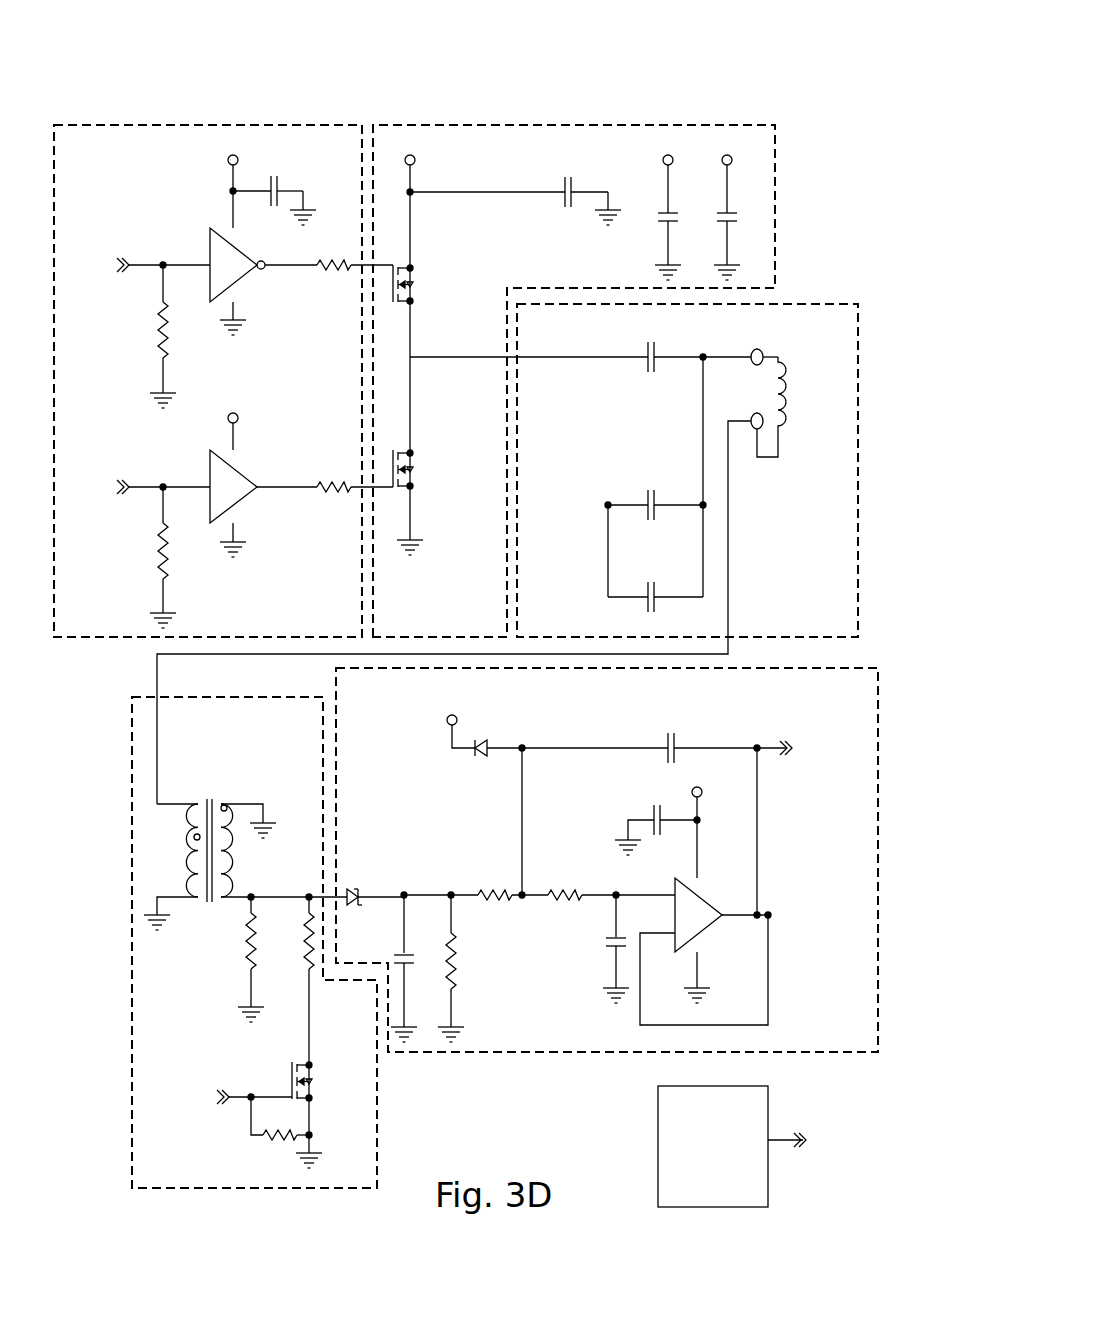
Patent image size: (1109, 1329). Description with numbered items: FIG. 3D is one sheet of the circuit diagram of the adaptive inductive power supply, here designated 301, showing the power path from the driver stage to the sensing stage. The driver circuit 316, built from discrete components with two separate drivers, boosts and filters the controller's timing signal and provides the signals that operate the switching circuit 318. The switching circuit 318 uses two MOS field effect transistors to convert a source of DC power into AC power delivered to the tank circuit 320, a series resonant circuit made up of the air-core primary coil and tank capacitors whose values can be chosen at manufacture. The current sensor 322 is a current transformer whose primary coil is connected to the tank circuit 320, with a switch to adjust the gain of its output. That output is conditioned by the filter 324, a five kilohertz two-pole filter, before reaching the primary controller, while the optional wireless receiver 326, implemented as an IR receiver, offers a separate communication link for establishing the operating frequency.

The power converter / coil driver circuit 301 is at (660, 86).
The driver circuit 316 is at (93, 637).
The switching circuit 318 is at (775, 179).
The tank circuit 320 is at (800, 303).
The current sensor 322 is at (132, 947).
The filter 324 is at (438, 1052).
The wireless receiver 326 is at (658, 1140).